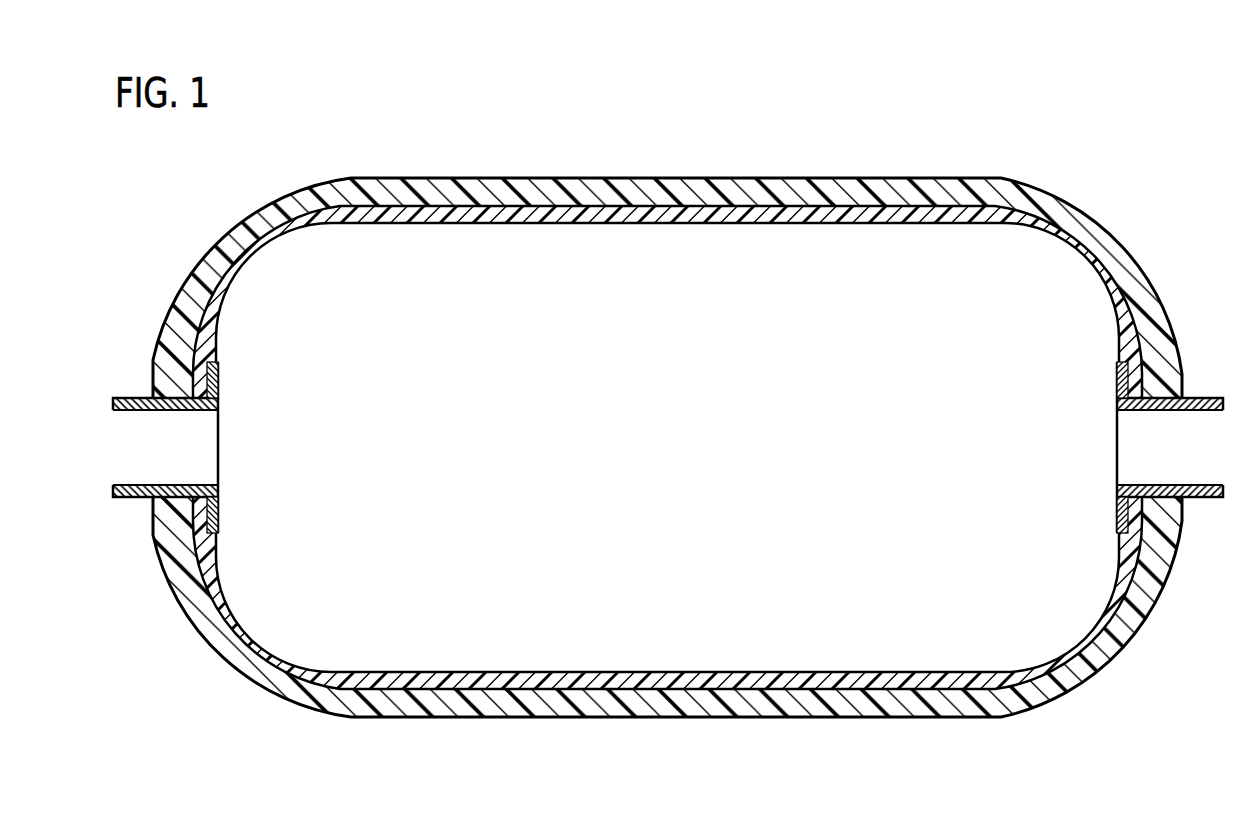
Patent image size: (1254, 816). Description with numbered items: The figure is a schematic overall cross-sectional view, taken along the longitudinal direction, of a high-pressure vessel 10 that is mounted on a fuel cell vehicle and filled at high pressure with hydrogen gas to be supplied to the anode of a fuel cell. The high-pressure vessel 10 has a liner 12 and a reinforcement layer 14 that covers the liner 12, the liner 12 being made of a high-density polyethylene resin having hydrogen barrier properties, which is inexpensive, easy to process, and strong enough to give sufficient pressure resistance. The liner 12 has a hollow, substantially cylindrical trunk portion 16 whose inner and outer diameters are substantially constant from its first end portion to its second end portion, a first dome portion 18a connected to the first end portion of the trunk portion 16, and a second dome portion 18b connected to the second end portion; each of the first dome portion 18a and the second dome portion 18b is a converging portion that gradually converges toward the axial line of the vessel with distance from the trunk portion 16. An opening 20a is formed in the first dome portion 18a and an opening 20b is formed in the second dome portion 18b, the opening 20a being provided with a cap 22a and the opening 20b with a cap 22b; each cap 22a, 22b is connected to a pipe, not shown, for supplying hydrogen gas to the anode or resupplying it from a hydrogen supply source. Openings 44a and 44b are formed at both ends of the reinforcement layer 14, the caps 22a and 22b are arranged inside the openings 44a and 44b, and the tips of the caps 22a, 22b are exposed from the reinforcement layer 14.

The high-pressure vessel 10 is at (1112, 140).
The liner 12 is at (667, 448).
The reinforcement layer 14 is at (926, 192).
The trunk portion 16 is at (644, 216).
The first dome portion 18a is at (245, 262).
The second dome portion 18b is at (1108, 287).
The opening 20a is at (200, 407).
The opening 20b is at (1136, 403).
The cap 22a is at (159, 440).
The cap 22b is at (1177, 438).
The opening 44a is at (165, 411).
The opening 44b is at (1171, 411).